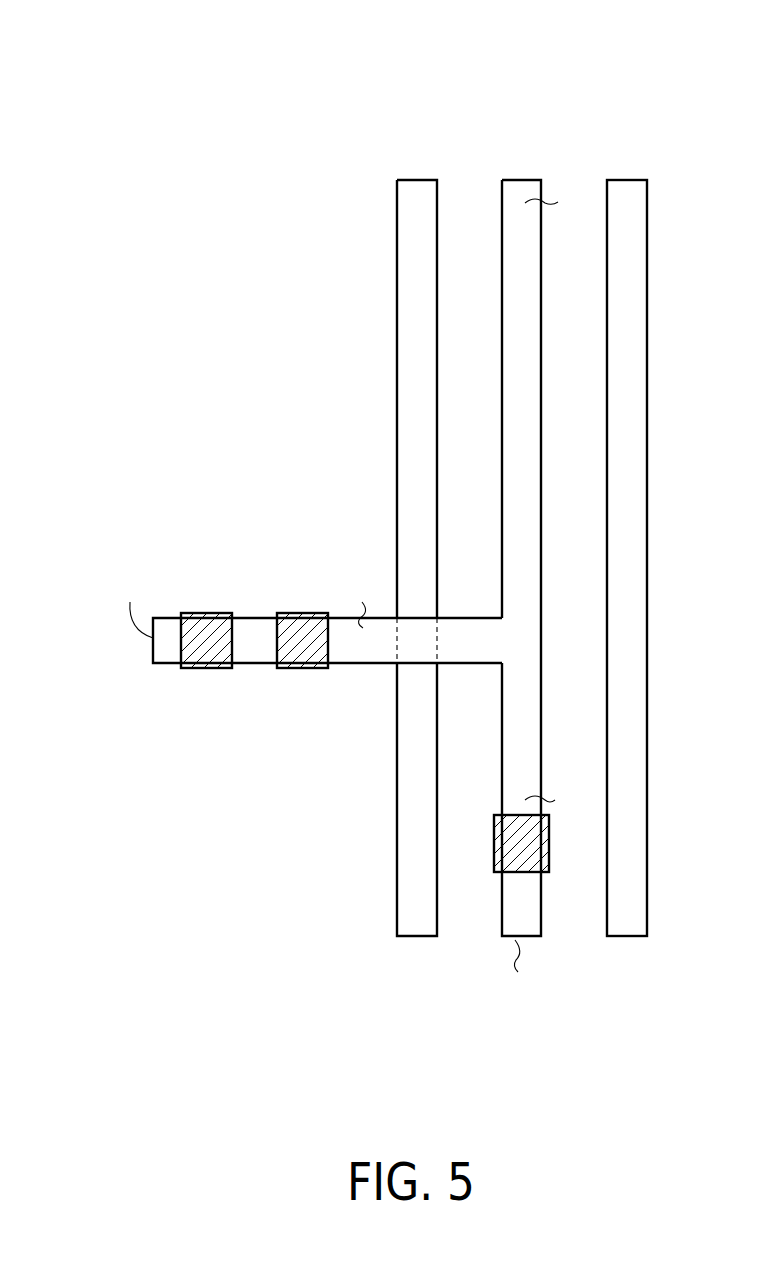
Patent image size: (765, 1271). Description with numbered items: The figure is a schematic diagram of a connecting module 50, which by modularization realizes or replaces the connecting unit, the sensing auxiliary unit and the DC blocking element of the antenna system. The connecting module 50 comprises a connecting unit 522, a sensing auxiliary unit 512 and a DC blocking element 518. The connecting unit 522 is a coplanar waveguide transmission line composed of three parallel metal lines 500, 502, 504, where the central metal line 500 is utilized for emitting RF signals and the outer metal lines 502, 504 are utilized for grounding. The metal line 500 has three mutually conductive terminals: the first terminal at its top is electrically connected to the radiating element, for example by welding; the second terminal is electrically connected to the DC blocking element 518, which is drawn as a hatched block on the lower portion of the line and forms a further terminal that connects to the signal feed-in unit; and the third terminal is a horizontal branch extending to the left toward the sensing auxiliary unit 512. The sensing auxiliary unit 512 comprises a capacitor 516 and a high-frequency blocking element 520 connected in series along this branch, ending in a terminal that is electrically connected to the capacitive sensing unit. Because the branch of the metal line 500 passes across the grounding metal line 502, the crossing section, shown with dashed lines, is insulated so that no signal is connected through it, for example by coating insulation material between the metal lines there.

The connecting module 50 is at (180, 82).
The metal line 500 is at (522, 187).
The metal line 502 is at (415, 187).
The metal line 504 is at (627, 187).
The sensing auxiliary unit 512 is at (338, 735).
The capacitor 516 is at (207, 657).
The DC blocking element 518 is at (540, 847).
The high-frequency blocking element 520 is at (305, 657).
The connecting unit 522 is at (660, 118).